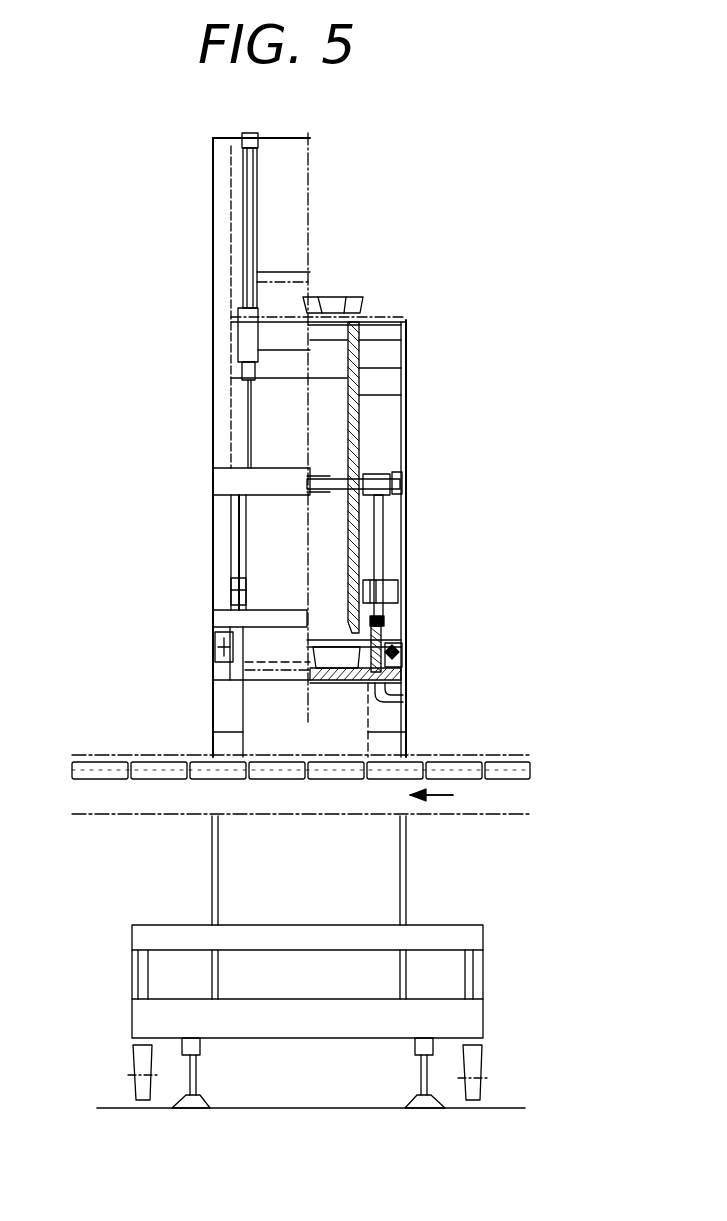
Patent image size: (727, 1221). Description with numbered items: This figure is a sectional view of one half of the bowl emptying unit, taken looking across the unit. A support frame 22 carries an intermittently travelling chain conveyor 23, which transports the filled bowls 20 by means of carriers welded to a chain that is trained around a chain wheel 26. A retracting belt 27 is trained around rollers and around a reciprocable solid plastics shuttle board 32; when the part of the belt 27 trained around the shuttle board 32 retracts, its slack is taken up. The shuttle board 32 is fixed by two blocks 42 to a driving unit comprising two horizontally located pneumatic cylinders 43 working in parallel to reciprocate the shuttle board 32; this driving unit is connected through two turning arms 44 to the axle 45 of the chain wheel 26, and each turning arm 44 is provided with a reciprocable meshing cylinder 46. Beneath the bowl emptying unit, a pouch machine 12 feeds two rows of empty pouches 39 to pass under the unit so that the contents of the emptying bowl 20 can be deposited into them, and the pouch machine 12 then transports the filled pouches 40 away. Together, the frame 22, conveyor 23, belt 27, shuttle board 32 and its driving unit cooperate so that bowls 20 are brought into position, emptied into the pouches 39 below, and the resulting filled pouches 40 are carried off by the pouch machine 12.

The pouch machine 12 is at (158, 803).
The filled bowl 20 is at (348, 297).
The support frame 22 is at (470, 943).
The chain conveyor 23 is at (352, 324).
The chain wheel 26 is at (358, 425).
The retracting belt 27 is at (263, 552).
The shuttle board 32 is at (405, 700).
The empty pouch 39 is at (467, 772).
The filled pouch 40 is at (107, 778).
The block 42 is at (399, 672).
The pneumatic cylinder 43 is at (396, 642).
The turning arm 44 is at (382, 542).
The axle 45 is at (330, 480).
The meshing cylinder 46 is at (392, 588).